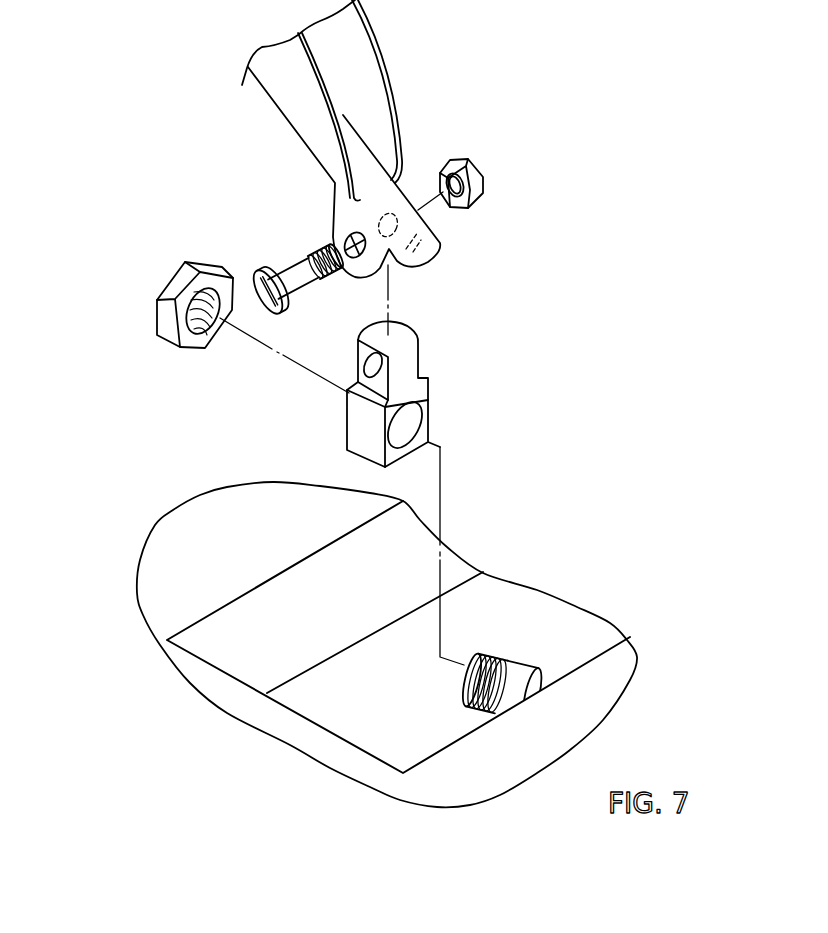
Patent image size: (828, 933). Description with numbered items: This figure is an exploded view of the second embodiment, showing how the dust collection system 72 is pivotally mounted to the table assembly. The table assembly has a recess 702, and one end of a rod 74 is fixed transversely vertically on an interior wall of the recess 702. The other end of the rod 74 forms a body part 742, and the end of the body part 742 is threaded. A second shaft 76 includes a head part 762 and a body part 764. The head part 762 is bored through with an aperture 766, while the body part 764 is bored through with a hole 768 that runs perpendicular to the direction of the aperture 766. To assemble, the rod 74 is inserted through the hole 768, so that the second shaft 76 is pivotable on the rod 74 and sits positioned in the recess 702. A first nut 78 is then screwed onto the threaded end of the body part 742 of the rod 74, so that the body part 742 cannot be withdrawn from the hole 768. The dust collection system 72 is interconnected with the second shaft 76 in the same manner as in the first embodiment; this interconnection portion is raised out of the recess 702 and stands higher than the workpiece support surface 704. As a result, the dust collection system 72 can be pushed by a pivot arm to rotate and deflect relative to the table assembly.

The dust collection system 72 is at (266, 99).
The first nut 78 is at (175, 282).
The aperture 766 is at (358, 366).
The second shaft 76 is at (469, 413).
The head part 762 is at (413, 370).
The body part 764 is at (445, 442).
The hole 768 is at (399, 431).
The workpiece support surface 704 is at (170, 560).
The recess 702 is at (327, 710).
The rod 74 is at (576, 584).
The body part 742 is at (497, 657).